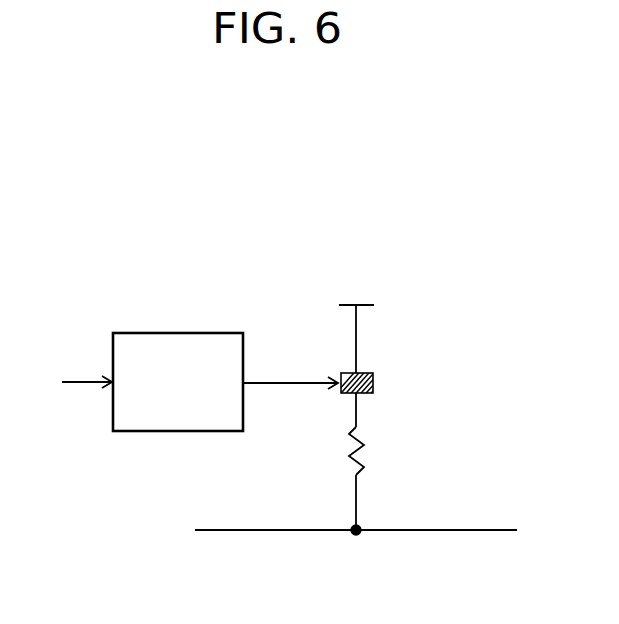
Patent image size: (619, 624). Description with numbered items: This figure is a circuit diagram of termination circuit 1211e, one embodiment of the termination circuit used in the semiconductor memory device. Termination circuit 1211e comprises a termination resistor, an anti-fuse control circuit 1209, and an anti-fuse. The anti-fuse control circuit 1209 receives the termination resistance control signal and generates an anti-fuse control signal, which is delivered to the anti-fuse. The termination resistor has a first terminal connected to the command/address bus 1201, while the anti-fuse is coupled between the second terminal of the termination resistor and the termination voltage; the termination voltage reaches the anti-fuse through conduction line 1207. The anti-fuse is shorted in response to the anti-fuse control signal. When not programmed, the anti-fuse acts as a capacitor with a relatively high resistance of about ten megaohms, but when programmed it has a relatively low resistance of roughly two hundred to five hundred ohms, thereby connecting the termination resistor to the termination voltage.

The termination circuit 1211e is at (390, 213).
The anti-fuse control circuit 1209 is at (216, 332).
The conduction line 1207 is at (355, 330).
The command/address bus 1201 is at (272, 531).